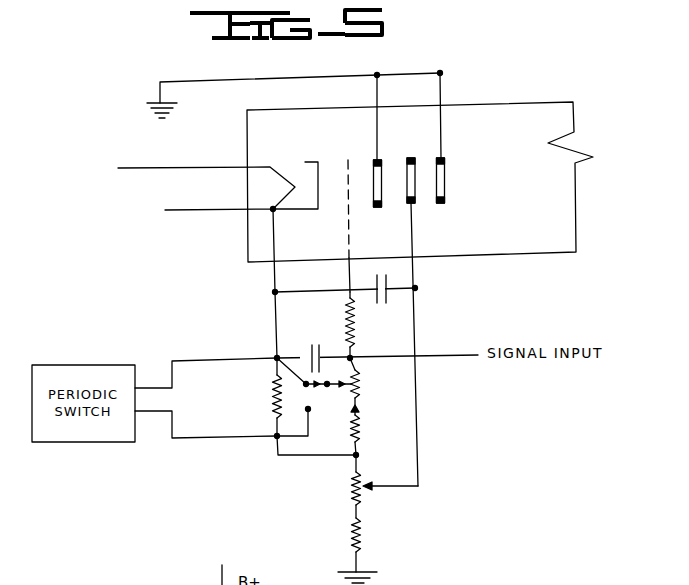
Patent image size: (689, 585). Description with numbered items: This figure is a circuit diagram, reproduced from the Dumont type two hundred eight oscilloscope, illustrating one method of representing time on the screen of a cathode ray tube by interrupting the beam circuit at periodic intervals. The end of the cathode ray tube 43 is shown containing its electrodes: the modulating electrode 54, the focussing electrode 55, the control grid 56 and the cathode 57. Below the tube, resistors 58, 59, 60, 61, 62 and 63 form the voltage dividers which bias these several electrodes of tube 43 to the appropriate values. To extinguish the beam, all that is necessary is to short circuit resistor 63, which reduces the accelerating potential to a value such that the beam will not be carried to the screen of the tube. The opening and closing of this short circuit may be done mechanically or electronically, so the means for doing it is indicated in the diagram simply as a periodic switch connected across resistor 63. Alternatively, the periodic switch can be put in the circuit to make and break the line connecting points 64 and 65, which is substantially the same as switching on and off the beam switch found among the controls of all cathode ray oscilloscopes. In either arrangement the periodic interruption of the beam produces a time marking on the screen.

The cathode ray tube 43 is at (576, 212).
The modulating electrode 54 is at (445, 204).
The focussing electrode 55 is at (412, 204).
The control grid 56 is at (349, 212).
The cathode 57 is at (305, 212).
The resistor 58 is at (360, 537).
The resistor 59 is at (352, 490).
The resistor 60 is at (358, 437).
The resistor 61 is at (358, 386).
The resistor 62 is at (355, 336).
The resistor 63 is at (273, 400).
The point 64 is at (306, 387).
The point 65 is at (278, 357).